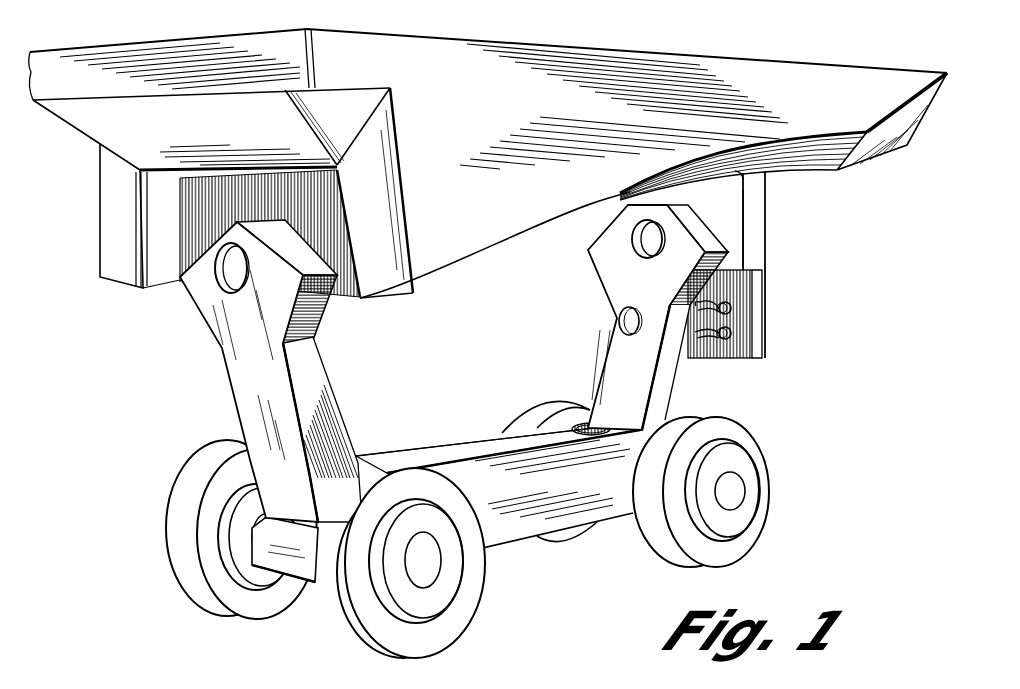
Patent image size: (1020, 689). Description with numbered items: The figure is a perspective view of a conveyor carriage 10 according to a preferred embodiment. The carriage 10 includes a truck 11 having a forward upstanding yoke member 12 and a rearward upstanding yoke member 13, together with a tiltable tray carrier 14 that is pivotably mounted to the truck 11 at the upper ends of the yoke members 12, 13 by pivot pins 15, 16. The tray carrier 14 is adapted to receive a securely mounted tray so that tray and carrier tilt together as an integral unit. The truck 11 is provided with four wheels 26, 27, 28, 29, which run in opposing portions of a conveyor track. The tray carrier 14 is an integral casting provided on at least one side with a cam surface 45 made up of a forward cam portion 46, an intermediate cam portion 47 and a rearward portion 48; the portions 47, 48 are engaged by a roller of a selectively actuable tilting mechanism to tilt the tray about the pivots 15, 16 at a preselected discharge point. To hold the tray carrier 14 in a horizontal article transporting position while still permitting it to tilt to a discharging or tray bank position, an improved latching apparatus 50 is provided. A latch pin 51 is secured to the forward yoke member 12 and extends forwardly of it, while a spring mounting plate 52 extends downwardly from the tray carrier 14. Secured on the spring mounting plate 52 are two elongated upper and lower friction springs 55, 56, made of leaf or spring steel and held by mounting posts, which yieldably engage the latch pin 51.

The carriage 10 is at (110, 417).
The truck 11 is at (462, 440).
The forward upstanding yoke member 12 is at (632, 285).
The rearward upstanding yoke member 13 is at (252, 374).
The tiltable tray carrier 14 is at (660, 40).
The pivot pin 15 is at (640, 242).
The pivot pin 16 is at (238, 270).
The wheel 26 is at (180, 543).
The wheel 27 is at (387, 640).
The wheel 28 is at (703, 553).
The wheel 29 is at (570, 413).
The cam surface 45 is at (840, 181).
The forward cam portion 46 is at (924, 104).
The intermediate cam portion 47 is at (822, 146).
The rearward portion 48 is at (544, 226).
The latching apparatus 50 is at (733, 298).
The latch pin 51 is at (700, 332).
The spring mounting plate 52 is at (757, 313).
The upper friction spring 55 is at (720, 295).
The lower friction spring 56 is at (708, 335).